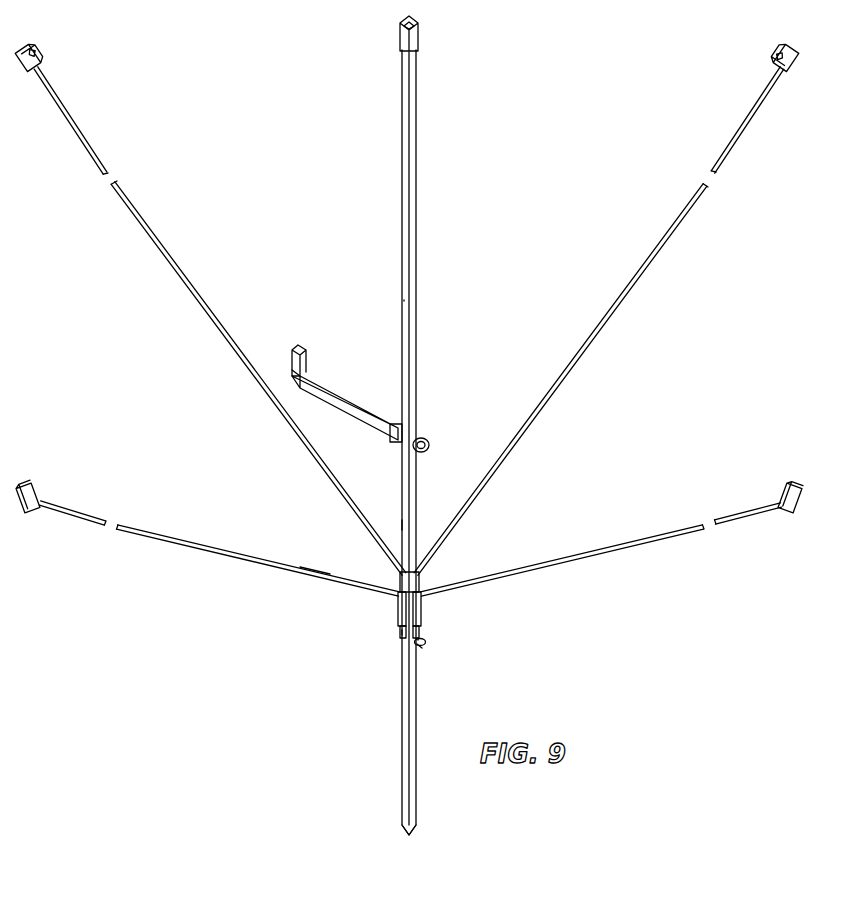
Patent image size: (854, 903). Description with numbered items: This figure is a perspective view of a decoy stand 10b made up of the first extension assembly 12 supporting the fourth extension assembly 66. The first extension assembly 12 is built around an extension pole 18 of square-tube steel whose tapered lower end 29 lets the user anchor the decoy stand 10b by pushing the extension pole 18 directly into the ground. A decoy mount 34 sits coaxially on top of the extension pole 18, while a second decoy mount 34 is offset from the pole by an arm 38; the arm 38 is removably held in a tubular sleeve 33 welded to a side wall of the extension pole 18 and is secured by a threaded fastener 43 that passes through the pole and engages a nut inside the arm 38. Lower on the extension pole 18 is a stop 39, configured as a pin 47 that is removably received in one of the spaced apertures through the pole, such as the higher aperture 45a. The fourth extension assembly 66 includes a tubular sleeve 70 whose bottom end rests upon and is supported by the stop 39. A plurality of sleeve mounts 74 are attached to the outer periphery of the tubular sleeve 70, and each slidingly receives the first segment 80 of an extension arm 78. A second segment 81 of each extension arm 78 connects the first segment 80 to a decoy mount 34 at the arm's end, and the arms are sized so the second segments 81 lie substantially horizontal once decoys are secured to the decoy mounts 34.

The decoy stand 10b is at (571, 65).
The first extension assembly 12 is at (465, 250).
The extension pole 18 is at (418, 140).
The tapered lower end 29 is at (410, 835).
The tubular sleeve 33 is at (397, 428).
The decoy mount 34 is at (400, 33).
The arm 38 is at (350, 400).
The stop 39 is at (442, 643).
The threaded fastener 43 is at (432, 442).
The higher aperture 45a is at (414, 528).
The pin 47 is at (420, 647).
The fourth extension assembly 66 is at (370, 637).
The tubular sleeve 70 is at (428, 575).
The sleeve mount 74 is at (396, 604).
The extension arm 78 is at (152, 228).
The first segment 80 is at (424, 630).
The second segment 81 is at (340, 582).